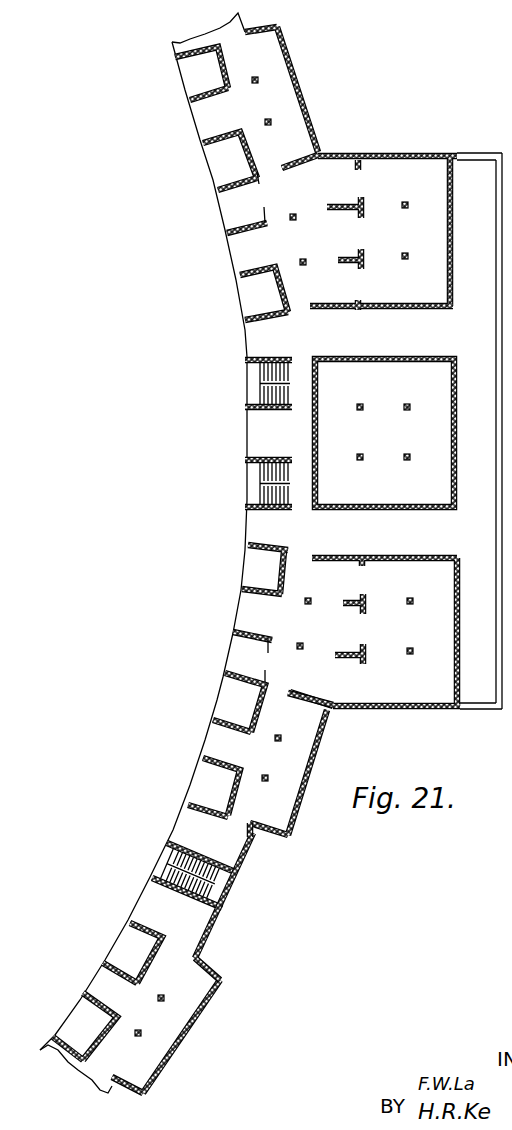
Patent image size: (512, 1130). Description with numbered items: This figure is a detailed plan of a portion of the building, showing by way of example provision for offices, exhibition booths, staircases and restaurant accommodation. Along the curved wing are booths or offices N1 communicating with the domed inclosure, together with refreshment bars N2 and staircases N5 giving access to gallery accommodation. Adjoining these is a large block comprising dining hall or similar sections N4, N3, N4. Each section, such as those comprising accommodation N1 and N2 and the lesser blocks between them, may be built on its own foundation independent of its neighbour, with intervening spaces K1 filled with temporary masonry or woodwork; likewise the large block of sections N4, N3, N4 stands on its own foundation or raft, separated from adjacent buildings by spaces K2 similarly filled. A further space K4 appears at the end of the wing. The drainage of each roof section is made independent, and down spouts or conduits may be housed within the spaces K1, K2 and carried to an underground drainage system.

The intervening space K1 is at (207, 933).
The space K2 is at (162, 1090).
The corridor K4 is at (241, 16).
The booths or offices N1 is at (159, 866).
The refreshment bars N2 is at (222, 893).
The dining hall N3 is at (384, 433).
The dining halls N4 is at (375, 431).
The staircases N5 is at (222, 634).